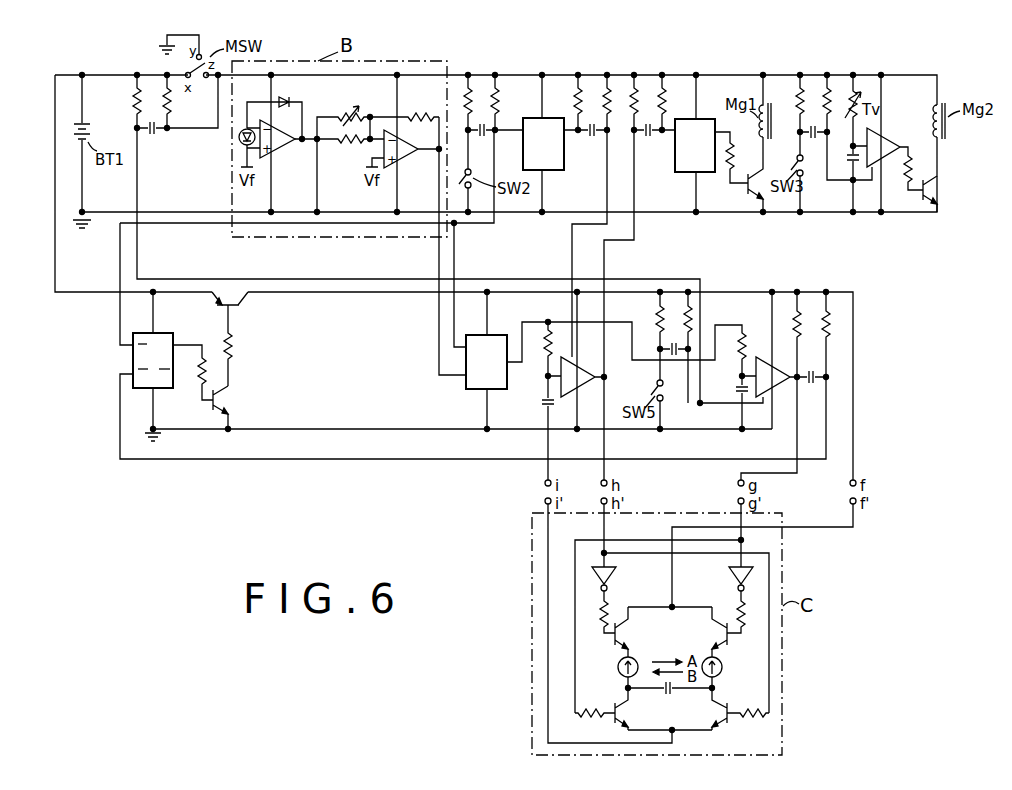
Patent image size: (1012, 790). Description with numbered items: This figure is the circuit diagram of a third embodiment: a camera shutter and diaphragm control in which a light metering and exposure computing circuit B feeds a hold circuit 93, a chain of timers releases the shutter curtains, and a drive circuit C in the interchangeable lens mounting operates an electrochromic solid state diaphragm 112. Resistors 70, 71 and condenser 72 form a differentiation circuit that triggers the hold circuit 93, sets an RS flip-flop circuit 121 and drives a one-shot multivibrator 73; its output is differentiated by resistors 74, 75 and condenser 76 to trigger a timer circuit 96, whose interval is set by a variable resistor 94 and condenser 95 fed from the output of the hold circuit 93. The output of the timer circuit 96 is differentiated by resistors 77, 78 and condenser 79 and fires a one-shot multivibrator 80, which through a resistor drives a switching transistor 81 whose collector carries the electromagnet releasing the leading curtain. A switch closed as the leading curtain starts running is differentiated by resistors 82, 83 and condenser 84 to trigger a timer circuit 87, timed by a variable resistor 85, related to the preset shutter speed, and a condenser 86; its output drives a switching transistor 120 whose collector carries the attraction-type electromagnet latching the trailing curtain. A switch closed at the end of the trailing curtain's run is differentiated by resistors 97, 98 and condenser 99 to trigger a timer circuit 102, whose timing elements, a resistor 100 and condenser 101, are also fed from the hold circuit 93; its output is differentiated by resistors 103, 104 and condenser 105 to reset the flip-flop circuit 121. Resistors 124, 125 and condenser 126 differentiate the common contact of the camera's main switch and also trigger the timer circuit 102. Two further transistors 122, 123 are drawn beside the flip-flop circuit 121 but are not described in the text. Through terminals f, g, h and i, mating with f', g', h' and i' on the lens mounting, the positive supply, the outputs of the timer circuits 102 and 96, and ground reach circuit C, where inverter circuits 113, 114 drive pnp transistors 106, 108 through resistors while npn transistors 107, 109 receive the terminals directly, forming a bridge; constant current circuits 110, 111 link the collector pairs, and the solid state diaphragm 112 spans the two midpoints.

The resistor 70 is at (471, 104).
The resistor 71 is at (498, 104).
The condenser 72 is at (482, 138).
The one-shot multivibrator 73 is at (550, 144).
The resistor 74 is at (575, 104).
The resistor 75 is at (604, 104).
The condenser 76 is at (592, 138).
The resistor 77 is at (632, 104).
The resistor 78 is at (661, 104).
The condenser 79 is at (648, 138).
The one-shot multivibrator 80 is at (702, 144).
The switching transistor 81 is at (748, 195).
The resistor 82 is at (790, 107).
The resistor 83 is at (818, 107).
The condenser 84 is at (813, 140).
The variable resistor 85 is at (852, 108).
The condenser 86 is at (850, 158).
The timer circuit 87 is at (887, 136).
The hold circuit 93 is at (472, 391).
The variable resistor 94 is at (547, 348).
The condenser 95 is at (544, 399).
The timer circuit 96 is at (584, 370).
The resistor 97 is at (657, 326).
The resistor 98 is at (686, 326).
The condenser 99 is at (676, 358).
The resistor 100 is at (745, 349).
The condenser 101 is at (740, 389).
The timer circuit 102 is at (783, 391).
The resistor 103 is at (793, 338).
The resistor 104 is at (820, 338).
The condenser 105 is at (811, 386).
The pnp transistor 106 is at (613, 641).
The npn transistor 107 is at (613, 731).
The pnp transistor 108 is at (733, 643).
The npn transistor 109 is at (736, 728).
The constant current circuit 110 is at (621, 677).
The constant current circuit 111 is at (725, 677).
The solid state diaphragm 112 is at (664, 695).
The inverter circuit 113 is at (610, 580).
The inverter circuit 114 is at (732, 580).
The switching transistor 120 is at (940, 191).
The RS flip-flop circuit 121 is at (131, 362).
The transistor 122 is at (231, 402).
The transistor 123 is at (233, 306).
The resistor 124 is at (134, 102).
The resistor 125 is at (170, 103).
The condenser 126 is at (151, 134).